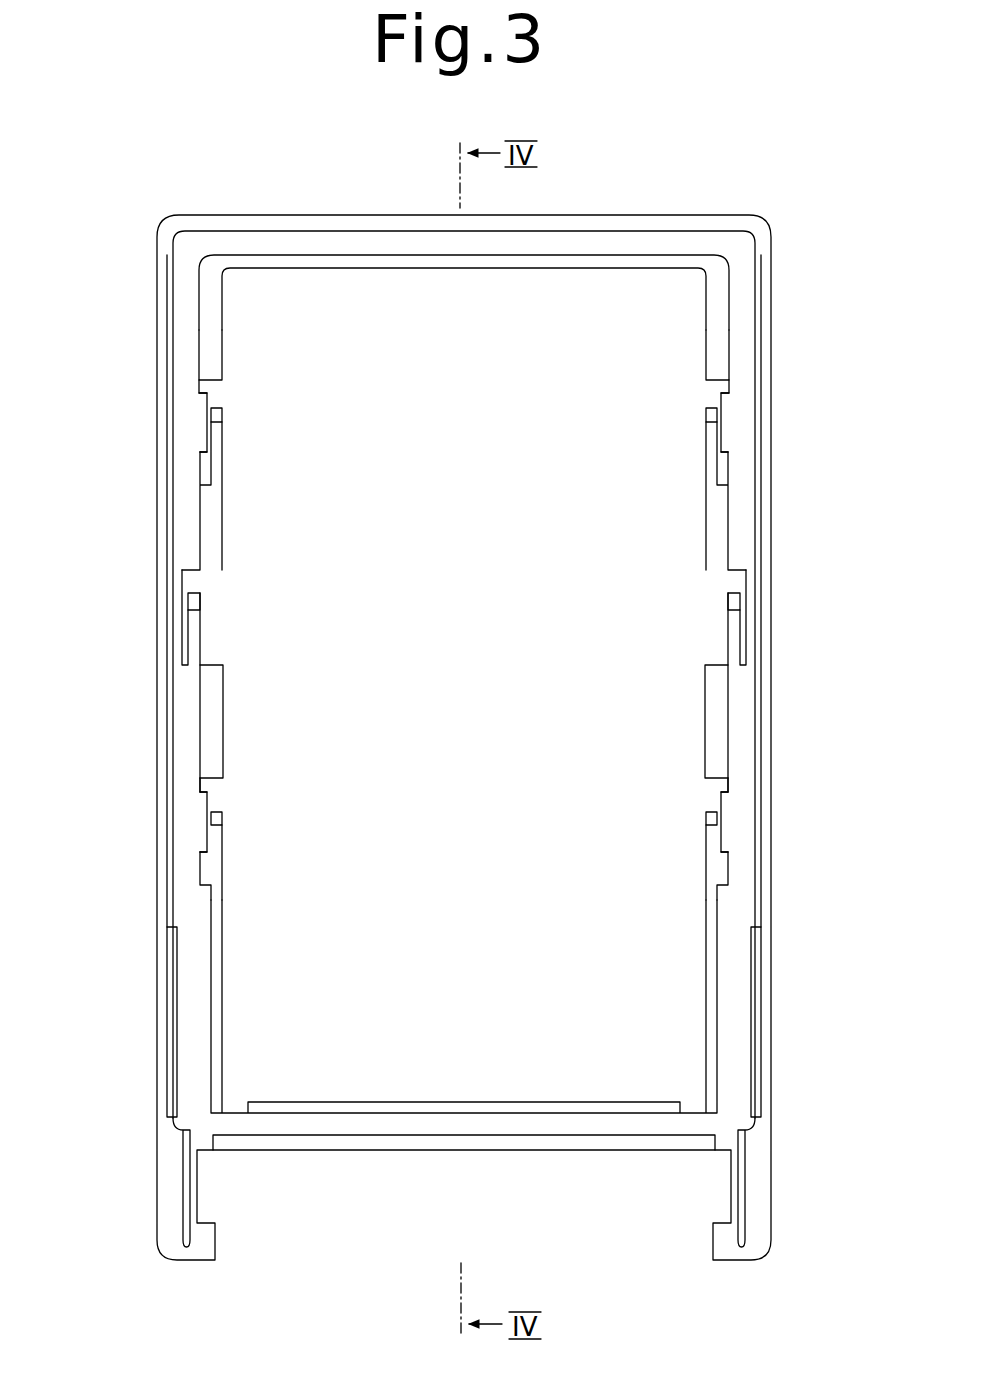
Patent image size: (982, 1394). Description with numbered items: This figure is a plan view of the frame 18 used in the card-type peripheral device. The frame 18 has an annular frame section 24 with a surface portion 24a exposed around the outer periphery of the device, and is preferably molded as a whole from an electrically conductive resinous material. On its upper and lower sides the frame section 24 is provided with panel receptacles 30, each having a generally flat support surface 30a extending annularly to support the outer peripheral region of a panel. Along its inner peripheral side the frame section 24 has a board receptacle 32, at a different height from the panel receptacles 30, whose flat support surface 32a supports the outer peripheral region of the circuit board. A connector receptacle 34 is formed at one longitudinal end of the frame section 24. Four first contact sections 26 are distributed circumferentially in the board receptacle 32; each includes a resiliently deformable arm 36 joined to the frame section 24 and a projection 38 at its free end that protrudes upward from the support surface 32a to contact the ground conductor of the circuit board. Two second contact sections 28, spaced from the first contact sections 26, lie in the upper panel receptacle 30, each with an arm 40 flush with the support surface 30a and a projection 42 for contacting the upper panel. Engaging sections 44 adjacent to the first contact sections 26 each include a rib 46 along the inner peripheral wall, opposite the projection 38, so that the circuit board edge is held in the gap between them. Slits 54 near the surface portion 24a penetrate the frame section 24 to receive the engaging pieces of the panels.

The frame 18 is at (464, 692).
The frame section 24 is at (247, 215).
The surface portion 24a is at (178, 633).
The first contact section 26 is at (228, 456).
The second contact section 28 is at (210, 648).
The panel receptacle 30 is at (371, 243).
The support surface 30a is at (730, 735).
The board receptacle 32 is at (715, 308).
The support surface 32a is at (222, 990).
The connector receptacle 34 is at (733, 1195).
The arm 36 is at (226, 440).
The projection 38 is at (222, 417).
The arm 40 is at (205, 622).
The projection 42 is at (202, 603).
The engaging section 44 is at (201, 411).
The rib 46 is at (205, 405).
The slit 54 is at (170, 968).